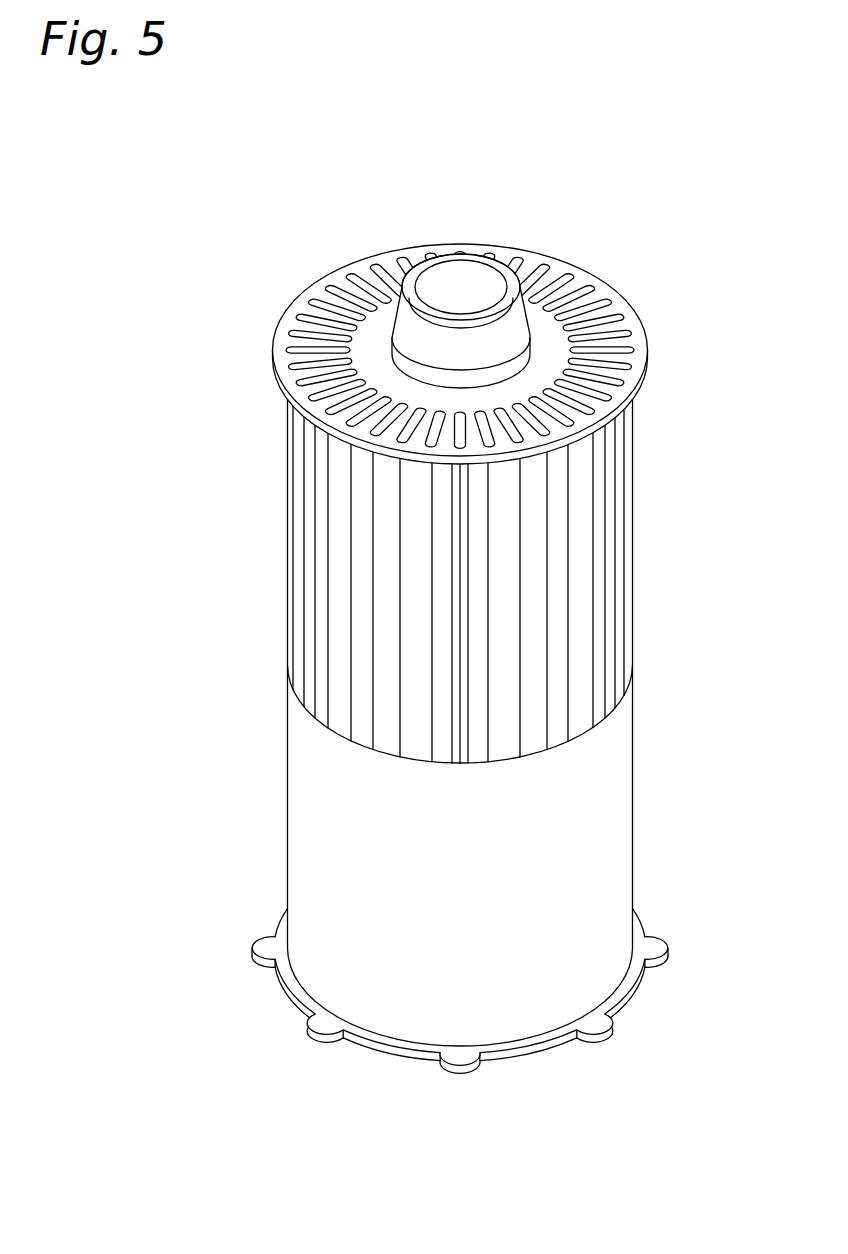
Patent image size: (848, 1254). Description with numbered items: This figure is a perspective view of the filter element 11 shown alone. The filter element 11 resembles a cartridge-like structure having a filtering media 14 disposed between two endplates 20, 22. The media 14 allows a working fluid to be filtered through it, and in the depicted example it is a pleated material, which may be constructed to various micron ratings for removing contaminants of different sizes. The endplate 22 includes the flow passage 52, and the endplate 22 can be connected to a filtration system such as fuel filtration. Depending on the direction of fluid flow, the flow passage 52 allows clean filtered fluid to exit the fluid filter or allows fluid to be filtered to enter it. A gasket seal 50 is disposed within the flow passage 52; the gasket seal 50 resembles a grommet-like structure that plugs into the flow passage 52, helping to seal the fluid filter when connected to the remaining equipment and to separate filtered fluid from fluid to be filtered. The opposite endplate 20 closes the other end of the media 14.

The filter element 11 is at (417, 633).
The filtering media 14 is at (633, 517).
The endplate 20 is at (632, 1007).
The endplate 22 is at (607, 280).
The gasket seal 50 is at (467, 291).
The flow passage 52 is at (450, 290).